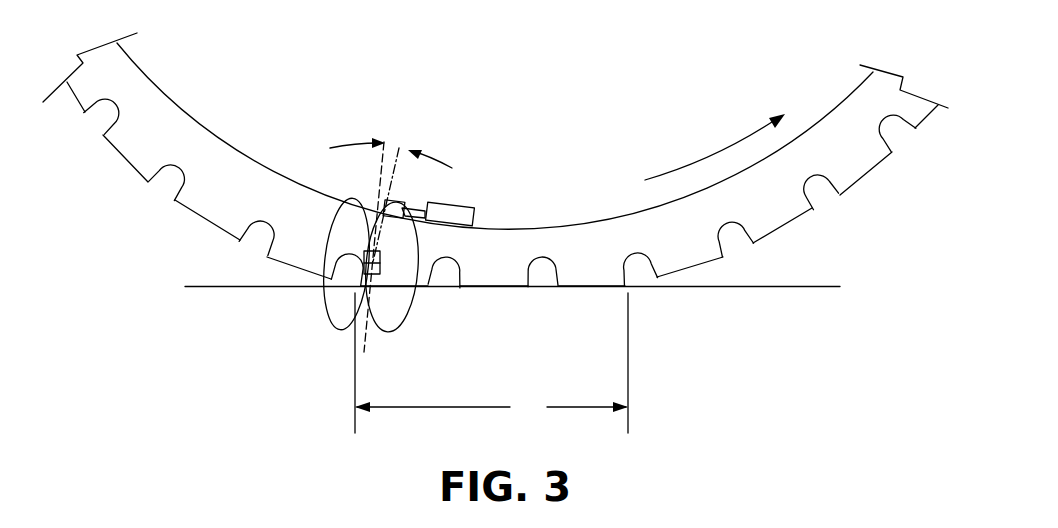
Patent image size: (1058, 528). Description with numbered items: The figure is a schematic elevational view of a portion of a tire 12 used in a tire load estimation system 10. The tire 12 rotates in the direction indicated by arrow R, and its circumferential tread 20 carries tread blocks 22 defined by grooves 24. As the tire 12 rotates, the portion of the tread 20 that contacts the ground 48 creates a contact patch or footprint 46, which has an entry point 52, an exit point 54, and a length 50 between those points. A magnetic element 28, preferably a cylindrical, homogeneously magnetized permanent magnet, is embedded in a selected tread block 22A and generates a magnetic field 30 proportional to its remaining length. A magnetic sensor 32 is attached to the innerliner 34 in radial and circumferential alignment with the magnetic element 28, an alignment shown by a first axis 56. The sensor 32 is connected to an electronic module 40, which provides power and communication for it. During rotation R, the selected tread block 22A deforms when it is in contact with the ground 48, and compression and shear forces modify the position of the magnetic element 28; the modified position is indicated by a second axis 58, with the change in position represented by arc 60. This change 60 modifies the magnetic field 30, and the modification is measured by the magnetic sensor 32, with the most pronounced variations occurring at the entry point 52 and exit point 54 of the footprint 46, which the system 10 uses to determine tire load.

The tire load estimation system 10 is at (264, 310).
The tire 12 is at (503, 201).
The tread 20 is at (137, 175).
The tread blocks 22 is at (480, 243).
The selected tread block 22A is at (383, 268).
The grooves 24 is at (160, 172).
The magnetic element 28 is at (419, 275).
The magnetic field 30 is at (353, 198).
The magnetic sensor 32 is at (407, 202).
The innerliner 34 is at (150, 72).
The electronic module 40 is at (470, 208).
The footprint 46 is at (500, 287).
The ground 48 is at (790, 287).
The length 50 is at (491, 408).
The entry point 52 is at (630, 393).
The exit point 54 is at (355, 362).
The first axis 56 is at (385, 140).
The second axis 58 is at (405, 144).
The arc 60 is at (397, 148).
The arrow indicating rotation R is at (723, 150).